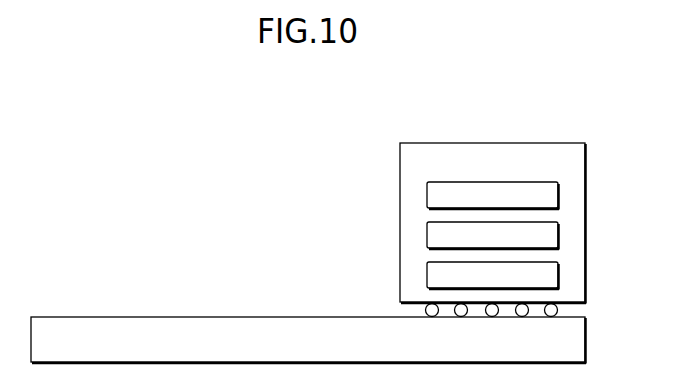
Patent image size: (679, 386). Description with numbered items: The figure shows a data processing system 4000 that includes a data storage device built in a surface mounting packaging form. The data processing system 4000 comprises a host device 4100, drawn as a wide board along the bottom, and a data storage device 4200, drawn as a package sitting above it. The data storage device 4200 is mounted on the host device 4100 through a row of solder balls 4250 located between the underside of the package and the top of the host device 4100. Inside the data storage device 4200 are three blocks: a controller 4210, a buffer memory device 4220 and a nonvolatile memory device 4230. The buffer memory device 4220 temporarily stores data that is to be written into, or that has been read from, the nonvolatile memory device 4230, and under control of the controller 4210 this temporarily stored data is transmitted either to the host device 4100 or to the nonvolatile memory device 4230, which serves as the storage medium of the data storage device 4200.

The data processing system 4000 is at (104, 116).
The host device 4100 is at (308, 340).
The data storage device 4200 is at (493, 223).
The controller 4210 is at (493, 196).
The buffer memory device 4220 is at (493, 236).
The nonvolatile memory device 4230 is at (493, 276).
The solder ball 4250 is at (567, 311).